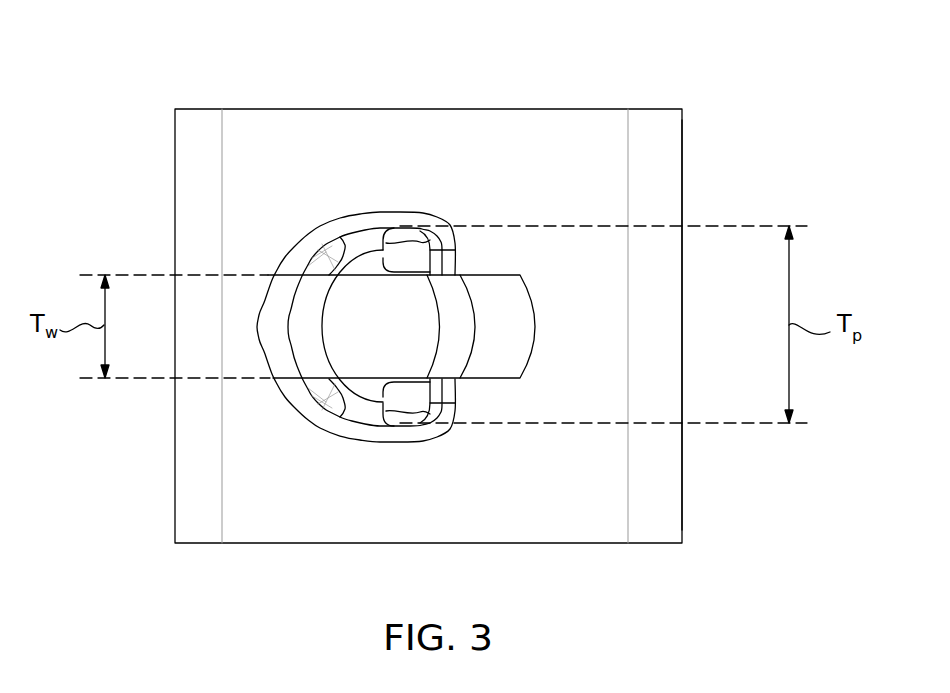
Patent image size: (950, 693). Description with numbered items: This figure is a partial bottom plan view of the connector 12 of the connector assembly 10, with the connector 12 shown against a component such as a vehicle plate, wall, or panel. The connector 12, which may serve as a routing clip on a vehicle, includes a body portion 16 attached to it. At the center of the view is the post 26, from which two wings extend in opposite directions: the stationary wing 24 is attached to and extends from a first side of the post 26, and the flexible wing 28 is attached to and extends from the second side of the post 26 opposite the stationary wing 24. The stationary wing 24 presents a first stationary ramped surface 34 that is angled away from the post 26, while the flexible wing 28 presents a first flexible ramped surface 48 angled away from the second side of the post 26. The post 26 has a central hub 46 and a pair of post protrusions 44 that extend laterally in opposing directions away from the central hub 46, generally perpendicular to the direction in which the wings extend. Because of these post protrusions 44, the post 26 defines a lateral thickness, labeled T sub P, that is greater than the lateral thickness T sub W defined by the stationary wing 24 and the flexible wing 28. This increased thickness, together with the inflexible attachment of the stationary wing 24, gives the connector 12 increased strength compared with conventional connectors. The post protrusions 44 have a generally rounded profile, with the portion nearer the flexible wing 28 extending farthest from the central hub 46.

The connector assembly 10 is at (720, 65).
The connector 12 is at (457, 173).
The body portion 16 is at (687, 163).
The stationary wing 24 is at (248, 302).
The post 26 is at (349, 247).
The flexible wing 28 is at (554, 317).
The first stationary ramped surface 34 is at (280, 327).
The post protrusions 44 is at (366, 243).
The central hub 46 is at (391, 306).
The first flexible ramped surface 48 is at (503, 342).